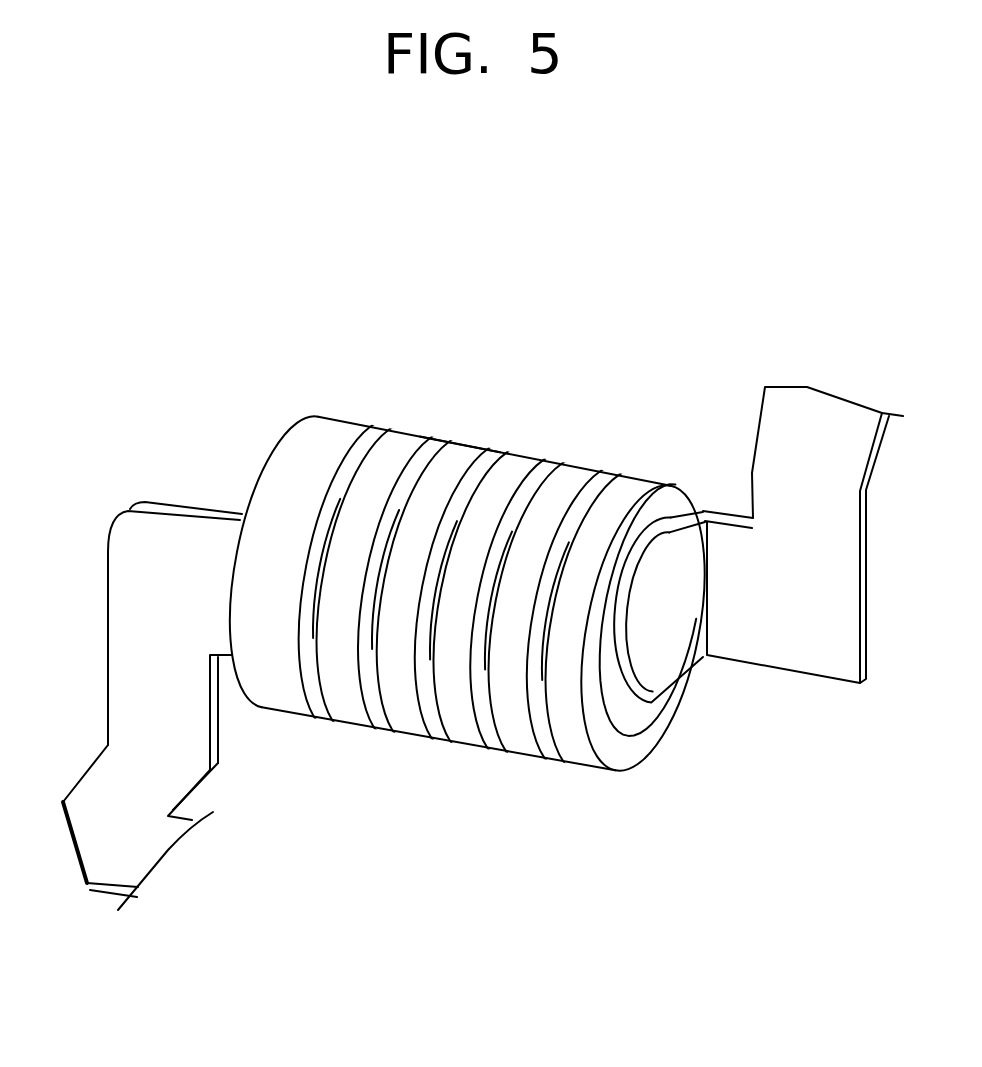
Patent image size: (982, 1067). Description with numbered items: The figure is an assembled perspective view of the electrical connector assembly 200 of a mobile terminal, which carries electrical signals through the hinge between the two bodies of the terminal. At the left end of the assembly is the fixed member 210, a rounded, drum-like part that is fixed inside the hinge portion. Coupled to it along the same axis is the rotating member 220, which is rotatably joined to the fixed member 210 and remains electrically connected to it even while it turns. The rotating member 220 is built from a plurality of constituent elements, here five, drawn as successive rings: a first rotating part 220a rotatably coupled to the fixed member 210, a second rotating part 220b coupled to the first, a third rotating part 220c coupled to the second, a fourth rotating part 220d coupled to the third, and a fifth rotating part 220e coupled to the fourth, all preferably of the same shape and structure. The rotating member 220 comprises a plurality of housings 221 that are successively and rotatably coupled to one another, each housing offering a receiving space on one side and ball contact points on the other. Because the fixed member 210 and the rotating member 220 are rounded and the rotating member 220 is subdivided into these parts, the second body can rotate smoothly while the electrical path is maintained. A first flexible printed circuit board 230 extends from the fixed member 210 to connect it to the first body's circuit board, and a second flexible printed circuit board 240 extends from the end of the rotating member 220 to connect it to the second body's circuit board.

The electrical connector assembly 200 is at (125, 276).
The fixed member 210 is at (274, 437).
The rotating member 220 is at (540, 448).
The housing 221 is at (458, 460).
The first rotating part 220a is at (352, 698).
The second rotating part 220b is at (412, 710).
The third rotating part 220c is at (467, 718).
The fourth rotating part 220d is at (523, 730).
The fifth rotating part 220e is at (580, 740).
The first flexible printed circuit board 230 is at (145, 555).
The second flexible printed circuit board 240 is at (813, 638).